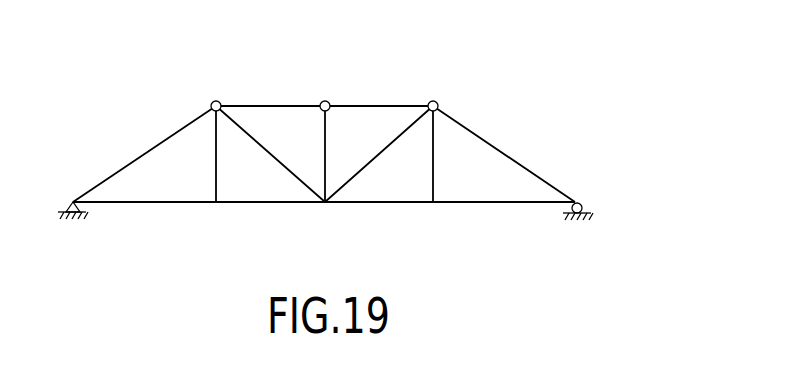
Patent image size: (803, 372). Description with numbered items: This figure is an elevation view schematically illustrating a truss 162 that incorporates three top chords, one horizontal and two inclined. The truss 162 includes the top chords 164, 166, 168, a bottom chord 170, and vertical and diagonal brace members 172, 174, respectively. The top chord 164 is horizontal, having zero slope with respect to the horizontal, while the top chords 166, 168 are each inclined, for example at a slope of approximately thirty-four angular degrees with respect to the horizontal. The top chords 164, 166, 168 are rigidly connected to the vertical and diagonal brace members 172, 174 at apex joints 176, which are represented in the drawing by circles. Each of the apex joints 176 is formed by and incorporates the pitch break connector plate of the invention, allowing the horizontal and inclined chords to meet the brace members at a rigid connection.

The truss 162 is at (325, 155).
The top chord 164 is at (368, 103).
The top chord 166 is at (155, 146).
The top chord 168 is at (487, 138).
The bottom chord 170 is at (132, 203).
The vertical brace members 172 is at (323, 138).
The diagonal brace members 174 is at (343, 187).
The apex joints 176 is at (204, 99).